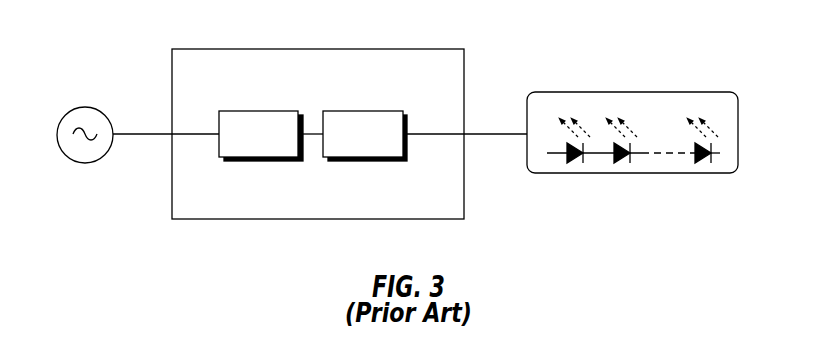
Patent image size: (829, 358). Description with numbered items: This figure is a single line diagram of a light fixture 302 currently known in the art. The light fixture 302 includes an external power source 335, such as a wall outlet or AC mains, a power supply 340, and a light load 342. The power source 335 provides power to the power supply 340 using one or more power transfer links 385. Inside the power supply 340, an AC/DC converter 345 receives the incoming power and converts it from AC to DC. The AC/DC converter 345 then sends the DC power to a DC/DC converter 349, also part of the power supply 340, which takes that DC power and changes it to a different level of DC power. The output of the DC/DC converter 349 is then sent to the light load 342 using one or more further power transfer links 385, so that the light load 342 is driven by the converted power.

The light fixture 302 is at (703, 46).
The external power source 335 is at (88, 107).
The power supply 340 is at (383, 49).
The AC/DC converter 345 is at (258, 111).
The DC/DC converter 349 is at (362, 111).
The light load 342 is at (707, 92).
The power transfer links 385 is at (130, 135).